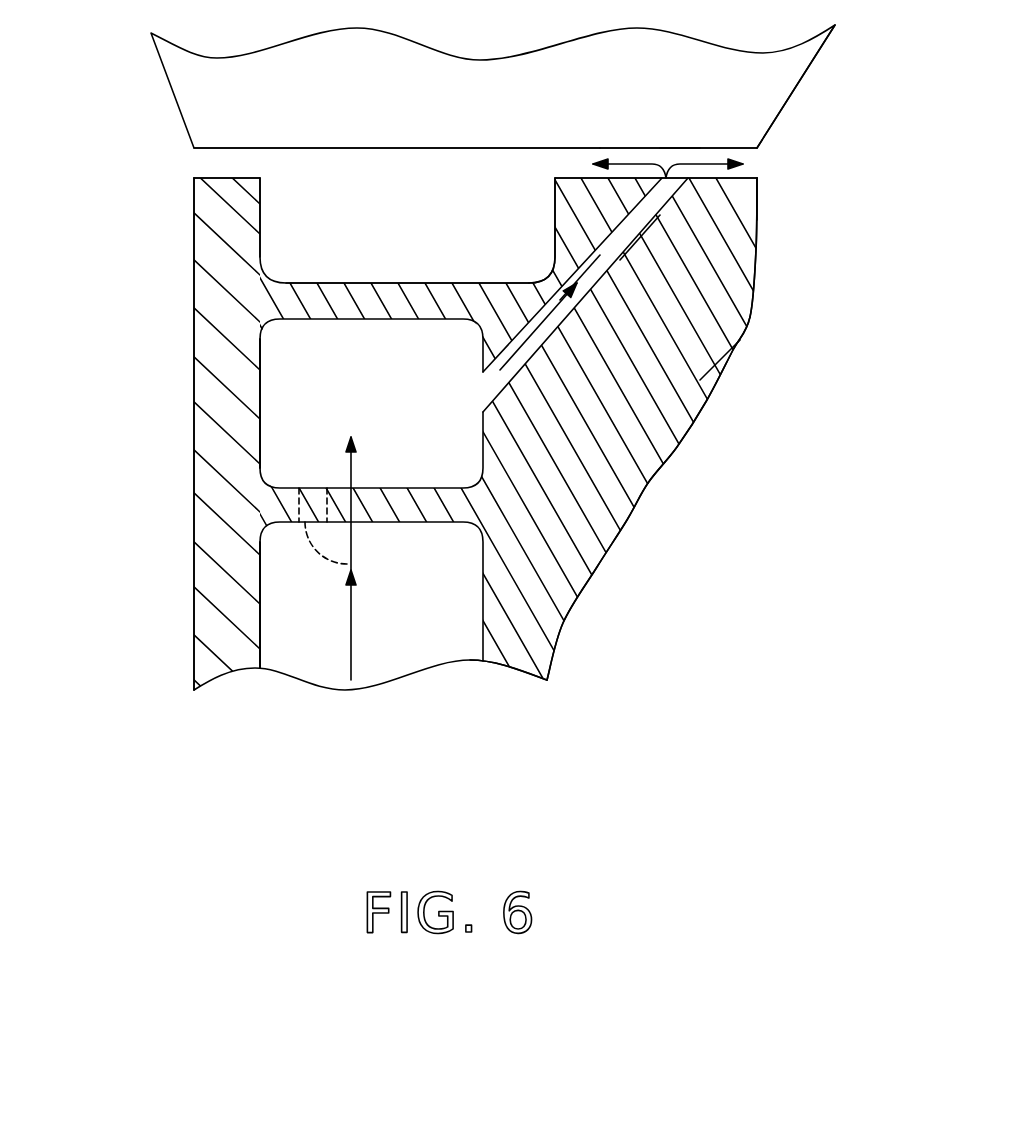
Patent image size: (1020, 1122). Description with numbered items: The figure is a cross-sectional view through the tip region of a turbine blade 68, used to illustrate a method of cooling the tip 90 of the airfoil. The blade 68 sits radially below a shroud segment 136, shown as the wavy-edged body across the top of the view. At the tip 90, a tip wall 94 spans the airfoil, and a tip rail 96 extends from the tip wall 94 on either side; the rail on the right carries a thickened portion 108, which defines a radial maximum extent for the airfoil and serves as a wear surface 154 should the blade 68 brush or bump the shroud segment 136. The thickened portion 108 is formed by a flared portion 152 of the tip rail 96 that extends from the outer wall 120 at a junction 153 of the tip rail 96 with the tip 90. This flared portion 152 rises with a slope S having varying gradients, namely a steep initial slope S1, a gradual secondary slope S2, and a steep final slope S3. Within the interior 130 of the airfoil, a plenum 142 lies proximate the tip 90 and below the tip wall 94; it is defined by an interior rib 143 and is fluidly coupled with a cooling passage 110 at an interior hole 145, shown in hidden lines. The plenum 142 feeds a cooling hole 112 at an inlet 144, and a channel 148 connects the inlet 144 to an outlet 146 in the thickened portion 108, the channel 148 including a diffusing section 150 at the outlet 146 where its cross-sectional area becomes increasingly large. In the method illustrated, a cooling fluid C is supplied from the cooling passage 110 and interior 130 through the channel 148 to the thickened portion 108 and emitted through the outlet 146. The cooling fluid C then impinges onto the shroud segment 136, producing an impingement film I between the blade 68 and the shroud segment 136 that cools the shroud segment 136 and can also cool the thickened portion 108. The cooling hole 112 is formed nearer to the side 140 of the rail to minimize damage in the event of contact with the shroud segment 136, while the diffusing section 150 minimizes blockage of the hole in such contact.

The turbine blade 68 is at (165, 232).
The tip 90 is at (423, 152).
The tip wall 94 is at (339, 283).
The tip rail 96 is at (205, 178).
The thickened portion 108 is at (693, 102).
The cooling passage 110 is at (285, 578).
The cooling hole 112 is at (682, 157).
The outer wall 120 is at (563, 643).
The interior 130 is at (290, 422).
The shroud segment 136 is at (322, 96).
The side 140 is at (555, 193).
The plenum 142 is at (367, 374).
The interior rib 143 is at (380, 503).
The inlet 144 is at (482, 388).
The interior hole 145 is at (351, 533).
The outlet 146 is at (705, 145).
The channel 148 is at (587, 280).
The diffusing section 150 is at (640, 217).
The flared portion 152 is at (667, 393).
The junction 153 is at (537, 673).
The wear surface 154 is at (723, 180).
The impingement film I is at (643, 163).
The cooling fluid C is at (352, 630).
The slope S is at (663, 468).
The steep initial slope S1 is at (592, 587).
The gradual secondary slope S2 is at (693, 430).
The steep final slope S3 is at (758, 262).